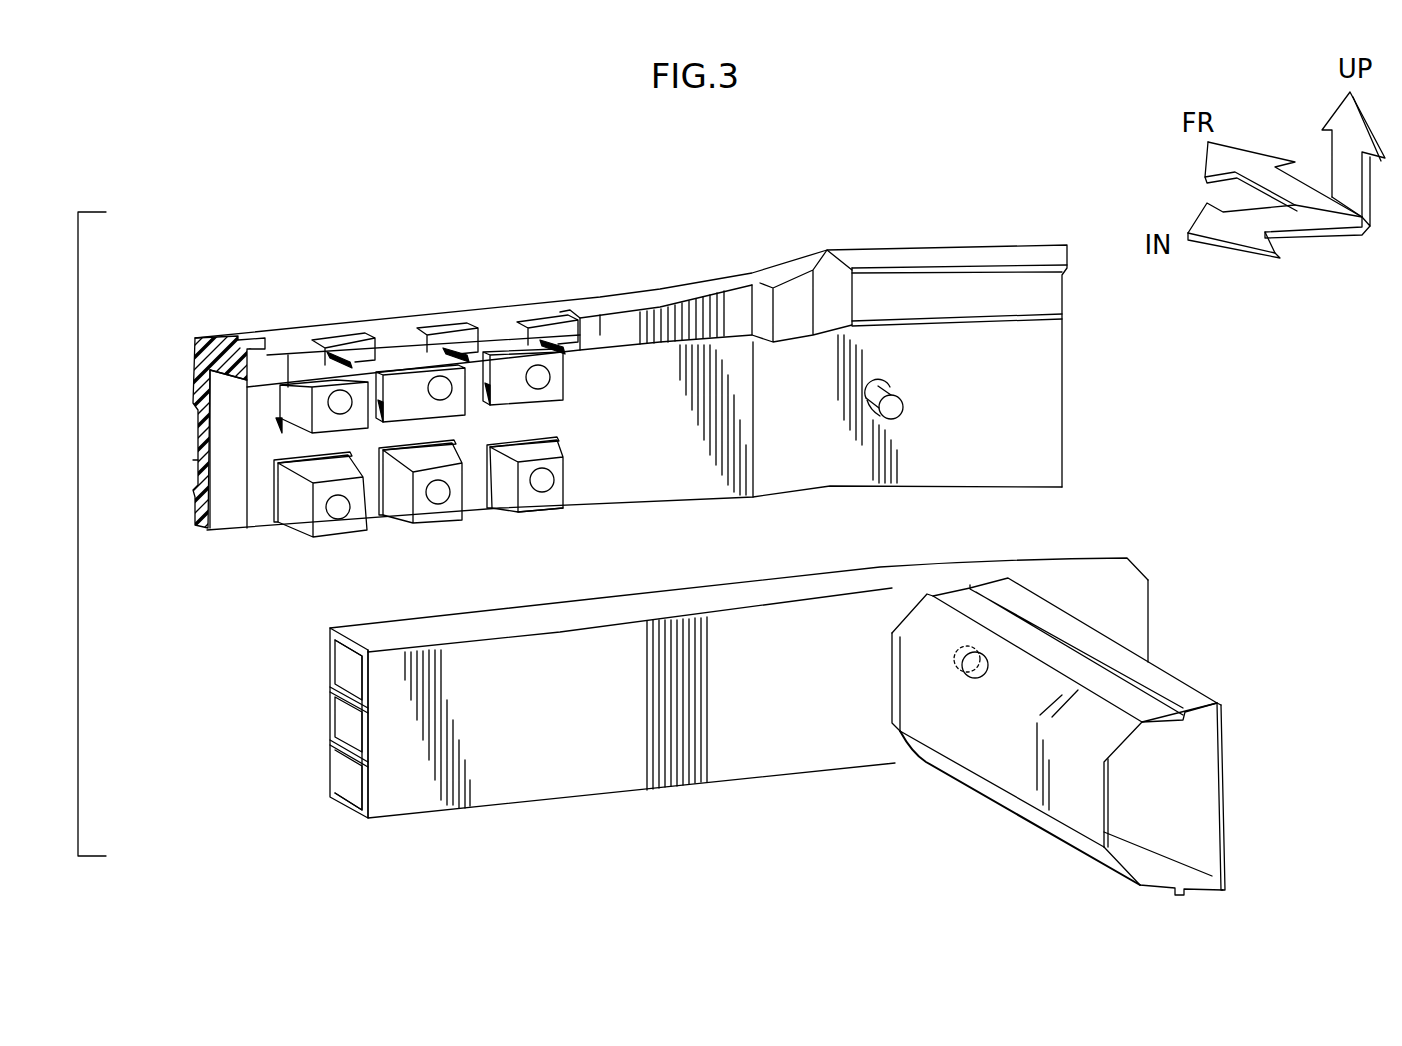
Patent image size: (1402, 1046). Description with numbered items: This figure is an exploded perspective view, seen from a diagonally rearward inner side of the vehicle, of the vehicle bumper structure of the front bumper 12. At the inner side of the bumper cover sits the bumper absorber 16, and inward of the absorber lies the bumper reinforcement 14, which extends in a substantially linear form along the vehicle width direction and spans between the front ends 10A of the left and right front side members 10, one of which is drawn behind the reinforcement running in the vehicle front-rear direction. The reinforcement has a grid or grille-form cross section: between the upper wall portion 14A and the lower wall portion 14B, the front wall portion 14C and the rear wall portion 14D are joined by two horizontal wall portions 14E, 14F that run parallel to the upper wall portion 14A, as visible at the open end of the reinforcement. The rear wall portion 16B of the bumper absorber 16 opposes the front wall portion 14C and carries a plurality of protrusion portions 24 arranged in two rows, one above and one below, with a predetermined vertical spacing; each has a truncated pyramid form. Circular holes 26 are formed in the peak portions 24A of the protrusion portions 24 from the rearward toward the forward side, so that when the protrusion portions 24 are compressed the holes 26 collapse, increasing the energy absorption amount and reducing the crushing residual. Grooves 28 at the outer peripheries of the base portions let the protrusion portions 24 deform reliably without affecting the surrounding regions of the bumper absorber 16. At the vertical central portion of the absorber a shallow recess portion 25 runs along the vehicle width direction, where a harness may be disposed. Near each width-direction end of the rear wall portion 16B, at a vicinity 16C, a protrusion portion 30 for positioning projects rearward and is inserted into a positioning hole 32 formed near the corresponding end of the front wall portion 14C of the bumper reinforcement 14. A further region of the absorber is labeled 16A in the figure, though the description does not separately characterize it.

The front side member 10 is at (1242, 772).
The front end 10A is at (884, 657).
The front bumper 12 is at (1221, 500).
The bumper reinforcement 14 is at (1122, 556).
The upper wall portion 14A is at (755, 588).
The lower wall portion 14B is at (338, 808).
The front wall portion 14C is at (332, 708).
The rear wall portion 14D is at (527, 713).
The horizontal wall portion 14E is at (347, 692).
The horizontal wall portion 14F is at (348, 762).
The bumper absorber 16 is at (1042, 232).
The flange portion 16A is at (196, 350).
The rear wall portion 16B is at (226, 432).
The vicinity of vehicle width direction end portion 16C is at (923, 458).
The protrusion portion 24 is at (576, 461).
The peak portion 24A is at (568, 498).
The recess portion 25 is at (193, 460).
The circular hole 26 is at (448, 388).
The groove 28 is at (272, 362).
The protrusion portion for positioning 30 is at (893, 402).
The positioning hole 32 is at (980, 680).